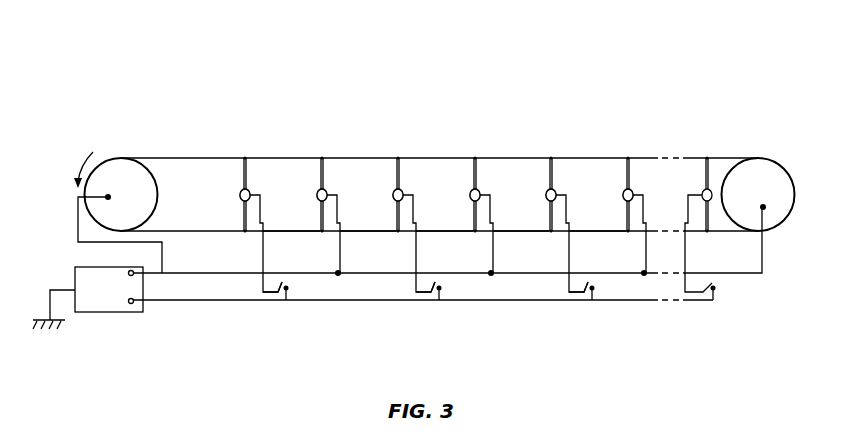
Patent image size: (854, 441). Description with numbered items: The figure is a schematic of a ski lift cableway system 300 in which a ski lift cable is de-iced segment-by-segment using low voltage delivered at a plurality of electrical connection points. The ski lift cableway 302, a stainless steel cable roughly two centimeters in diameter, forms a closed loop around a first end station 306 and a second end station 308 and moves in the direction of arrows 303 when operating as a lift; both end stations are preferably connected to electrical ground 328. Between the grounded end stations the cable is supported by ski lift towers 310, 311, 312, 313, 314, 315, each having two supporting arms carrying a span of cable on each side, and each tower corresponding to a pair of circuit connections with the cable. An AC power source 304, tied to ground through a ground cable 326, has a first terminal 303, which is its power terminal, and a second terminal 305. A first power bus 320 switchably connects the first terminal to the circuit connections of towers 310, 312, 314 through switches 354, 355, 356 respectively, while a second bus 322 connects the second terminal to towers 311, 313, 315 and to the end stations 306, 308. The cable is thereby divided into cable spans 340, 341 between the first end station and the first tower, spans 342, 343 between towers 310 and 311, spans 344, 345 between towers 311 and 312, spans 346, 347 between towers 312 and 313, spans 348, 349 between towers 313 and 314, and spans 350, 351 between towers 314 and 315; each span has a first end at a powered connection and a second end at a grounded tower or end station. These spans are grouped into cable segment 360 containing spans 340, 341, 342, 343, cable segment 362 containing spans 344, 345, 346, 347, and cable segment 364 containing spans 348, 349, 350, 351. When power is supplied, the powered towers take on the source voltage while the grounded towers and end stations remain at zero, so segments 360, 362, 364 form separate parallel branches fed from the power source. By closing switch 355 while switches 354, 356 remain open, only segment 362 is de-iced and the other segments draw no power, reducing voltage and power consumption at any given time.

The ski lift cableway system 300 is at (282, 52).
The ski lift cableway 302 is at (245, 157).
The first terminal 303 is at (152, 148).
The AC power source 304 is at (88, 313).
The second terminal 305 is at (135, 276).
The first end station 306 is at (117, 157).
The second end station 308 is at (760, 157).
The ski lift tower 310 is at (251, 195).
The ski lift tower 311 is at (328, 195).
The ski lift tower 312 is at (404, 195).
The ski lift tower 313 is at (481, 195).
The ski lift tower 314 is at (557, 195).
The ski lift tower 315 is at (634, 195).
The first power bus 320 is at (356, 301).
The second bus 322 is at (198, 272).
The ground cable 326 is at (50, 288).
The electrical ground 328 is at (23, 334).
The cable span 340 is at (215, 157).
The cable span 341 is at (198, 230).
The cable span 342 is at (293, 157).
The cable span 343 is at (299, 232).
The cable span 344 is at (372, 157).
The cable span 345 is at (369, 232).
The cable span 346 is at (450, 157).
The cable span 347 is at (448, 232).
The cable span 348 is at (535, 157).
The cable span 349 is at (526, 232).
The cable span 350 is at (602, 157).
The cable span 351 is at (606, 232).
The switch 354 is at (271, 301).
The switch 355 is at (427, 301).
The switch 356 is at (586, 300).
The cable segment 360 is at (179, 86).
The cable segment 362 is at (421, 94).
The cable segment 364 is at (576, 104).